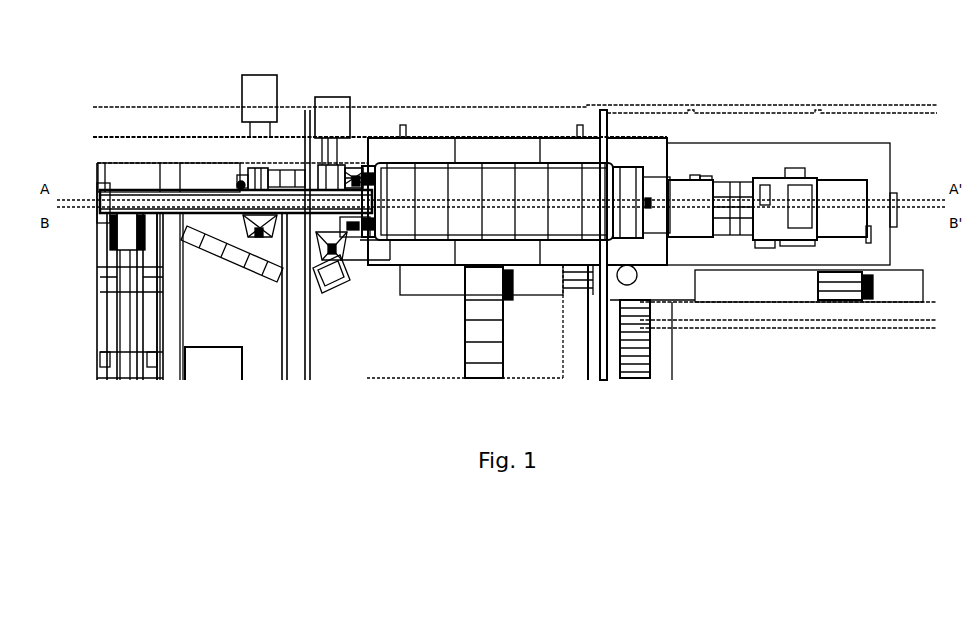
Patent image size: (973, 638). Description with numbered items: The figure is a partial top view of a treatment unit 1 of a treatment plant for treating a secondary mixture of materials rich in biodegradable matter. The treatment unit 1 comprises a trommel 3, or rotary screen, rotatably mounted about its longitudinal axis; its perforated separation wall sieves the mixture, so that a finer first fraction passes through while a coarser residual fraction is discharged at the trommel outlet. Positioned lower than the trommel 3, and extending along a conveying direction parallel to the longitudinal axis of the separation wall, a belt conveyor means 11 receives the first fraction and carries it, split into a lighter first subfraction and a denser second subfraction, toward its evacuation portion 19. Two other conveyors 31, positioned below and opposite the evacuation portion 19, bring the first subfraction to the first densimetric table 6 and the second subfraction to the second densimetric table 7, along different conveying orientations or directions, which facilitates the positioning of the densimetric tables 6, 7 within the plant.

The treatment unit 1 is at (240, 62).
The trommel 3 is at (502, 178).
The first densimetric table 6 is at (258, 242).
The second densimetric table 7 is at (333, 252).
The conveyor means 11 is at (358, 176).
The evacuation portion 19 is at (345, 178).
The other conveyors 31 is at (290, 180).